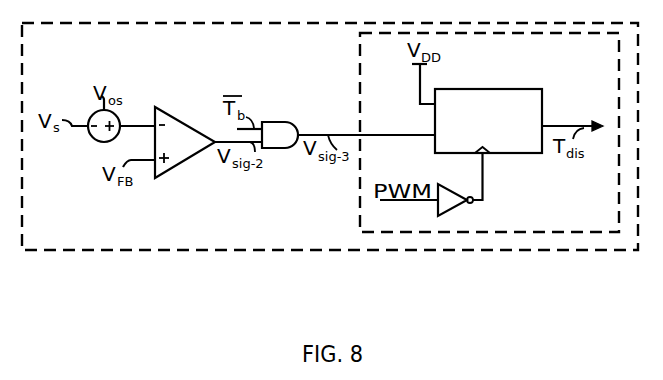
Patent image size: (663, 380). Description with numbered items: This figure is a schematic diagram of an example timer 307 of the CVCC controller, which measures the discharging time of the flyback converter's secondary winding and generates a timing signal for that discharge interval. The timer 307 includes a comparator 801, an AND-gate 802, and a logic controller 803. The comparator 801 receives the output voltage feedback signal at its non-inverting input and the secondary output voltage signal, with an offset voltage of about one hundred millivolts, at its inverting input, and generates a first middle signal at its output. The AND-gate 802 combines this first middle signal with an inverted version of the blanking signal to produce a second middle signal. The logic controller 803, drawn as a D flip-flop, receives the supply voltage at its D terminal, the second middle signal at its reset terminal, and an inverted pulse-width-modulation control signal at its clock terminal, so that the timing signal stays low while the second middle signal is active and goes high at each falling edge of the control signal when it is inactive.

The timer 307 is at (172, 243).
The comparator 801 is at (190, 148).
The AND-gate 802 is at (278, 122).
The logic controller 803 is at (490, 89).